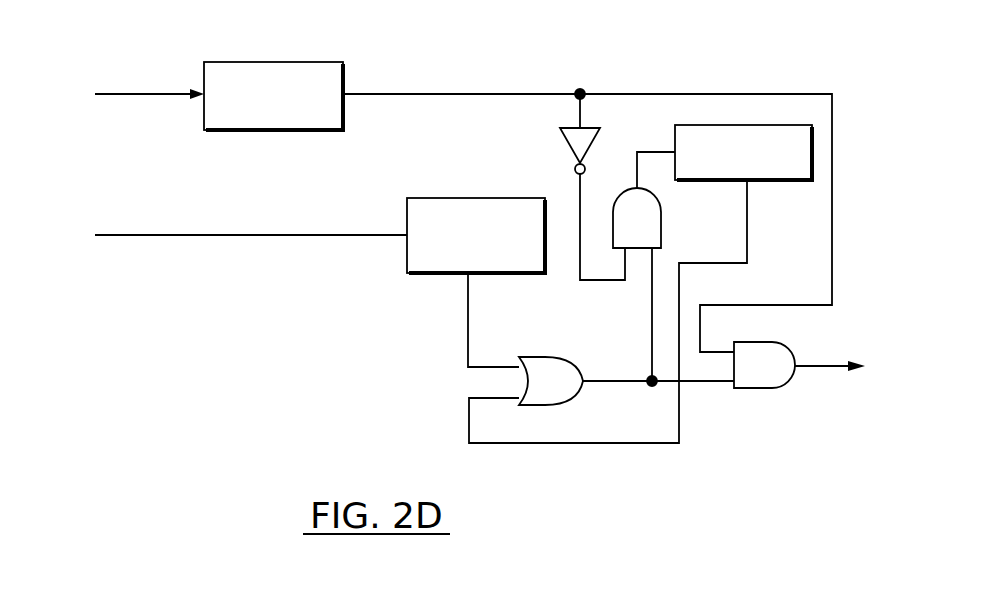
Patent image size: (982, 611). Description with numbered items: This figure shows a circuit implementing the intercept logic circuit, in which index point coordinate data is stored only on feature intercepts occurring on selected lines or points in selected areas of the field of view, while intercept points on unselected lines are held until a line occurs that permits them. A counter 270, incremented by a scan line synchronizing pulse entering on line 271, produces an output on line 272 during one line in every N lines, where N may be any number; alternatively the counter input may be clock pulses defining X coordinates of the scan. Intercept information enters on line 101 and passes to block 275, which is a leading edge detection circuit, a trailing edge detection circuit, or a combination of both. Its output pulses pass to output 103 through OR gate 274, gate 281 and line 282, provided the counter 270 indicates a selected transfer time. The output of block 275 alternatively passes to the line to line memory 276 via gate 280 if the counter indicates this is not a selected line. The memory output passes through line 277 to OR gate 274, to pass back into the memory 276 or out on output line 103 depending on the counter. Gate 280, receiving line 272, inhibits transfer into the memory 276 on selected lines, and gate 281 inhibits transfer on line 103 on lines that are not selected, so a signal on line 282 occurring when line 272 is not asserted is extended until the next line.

The line 271 is at (160, 94).
The counter 270 is at (293, 131).
The line 272 is at (440, 94).
The line to line memory 276 is at (691, 124).
The gate 280 is at (663, 215).
The line 101 is at (146, 235).
The detection circuit block 275 is at (432, 275).
The OR gate 274 is at (565, 398).
The line 277 is at (632, 443).
The line 282 is at (697, 387).
The gate 281 is at (766, 389).
The output line 103 is at (819, 368).